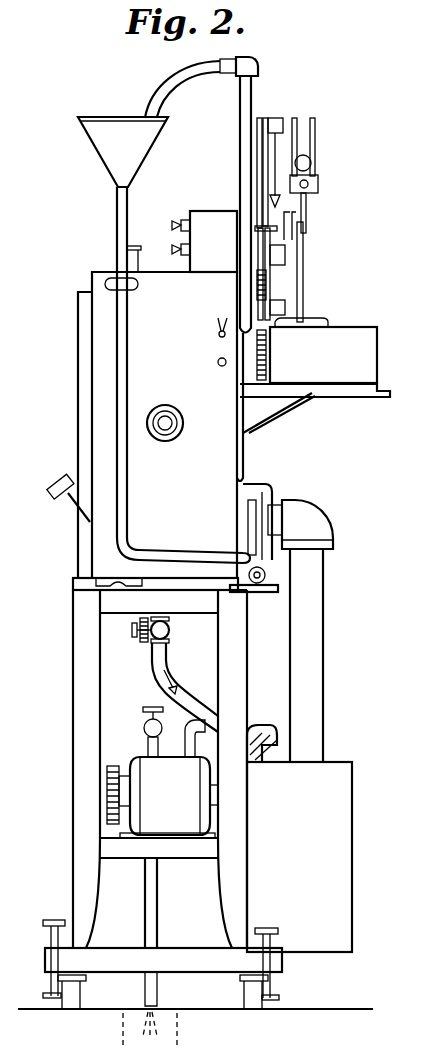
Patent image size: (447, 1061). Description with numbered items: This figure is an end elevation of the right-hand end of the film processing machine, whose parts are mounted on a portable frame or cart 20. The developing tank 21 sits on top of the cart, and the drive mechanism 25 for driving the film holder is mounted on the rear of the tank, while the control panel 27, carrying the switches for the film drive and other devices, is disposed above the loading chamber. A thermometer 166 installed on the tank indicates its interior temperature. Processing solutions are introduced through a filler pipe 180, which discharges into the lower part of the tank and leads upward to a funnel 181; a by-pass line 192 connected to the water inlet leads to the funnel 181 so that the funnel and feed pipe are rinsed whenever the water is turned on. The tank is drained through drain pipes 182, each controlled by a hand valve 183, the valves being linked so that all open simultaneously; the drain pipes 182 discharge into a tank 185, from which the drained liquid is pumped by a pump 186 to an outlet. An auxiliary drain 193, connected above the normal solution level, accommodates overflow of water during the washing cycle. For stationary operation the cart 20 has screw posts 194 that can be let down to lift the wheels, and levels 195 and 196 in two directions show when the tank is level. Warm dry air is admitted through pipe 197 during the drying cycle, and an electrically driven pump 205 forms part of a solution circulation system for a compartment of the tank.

The portable frame or cart 20 is at (75, 716).
The developing tank 21 is at (235, 482).
The drive mechanism 25 is at (384, 335).
The control panel 27 is at (211, 220).
The thermometer 166 is at (62, 481).
The filler pipe 180 is at (118, 467).
The funnel 181 is at (143, 141).
The drain pipe 182 is at (191, 698).
The hand valve 183 is at (170, 632).
The tank 185 is at (333, 775).
The pump 186 is at (153, 775).
The by-pass line 192 is at (250, 100).
The auxiliary drain 193 is at (312, 577).
The screw post 194 is at (52, 920).
The level 195 is at (82, 577).
The level 196 is at (138, 583).
The pipe 197 is at (175, 413).
The electrically driven pump 205 is at (258, 586).